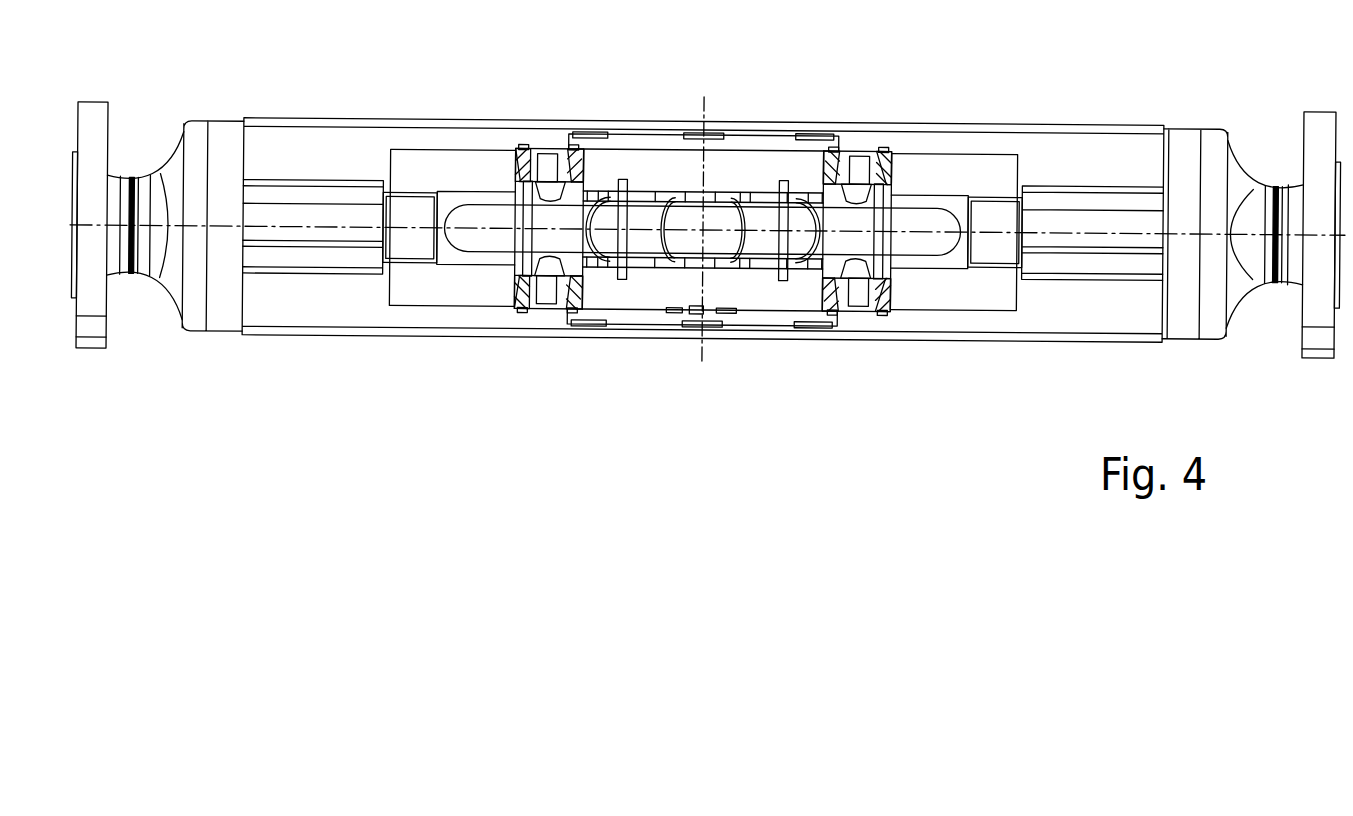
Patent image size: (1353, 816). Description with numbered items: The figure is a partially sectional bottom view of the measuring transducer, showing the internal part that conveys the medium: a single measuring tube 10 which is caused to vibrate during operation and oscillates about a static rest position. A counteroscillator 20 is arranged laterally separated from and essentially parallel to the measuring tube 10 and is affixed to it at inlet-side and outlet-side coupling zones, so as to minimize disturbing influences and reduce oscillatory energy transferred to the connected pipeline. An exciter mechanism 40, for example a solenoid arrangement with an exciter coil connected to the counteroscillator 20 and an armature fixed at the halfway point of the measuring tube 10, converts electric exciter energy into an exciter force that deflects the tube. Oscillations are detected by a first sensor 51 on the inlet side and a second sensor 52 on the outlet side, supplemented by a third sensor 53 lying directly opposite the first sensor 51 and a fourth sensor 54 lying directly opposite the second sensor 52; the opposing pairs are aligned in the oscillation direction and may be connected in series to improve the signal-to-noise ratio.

The measuring tube 10 is at (502, 218).
The counteroscillator 20 is at (658, 137).
The exciter mechanism 40 is at (690, 330).
The first sensor 51 is at (505, 332).
The second sensor 52 is at (883, 335).
The third sensor 53 is at (527, 118).
The fourth sensor 54 is at (913, 123).